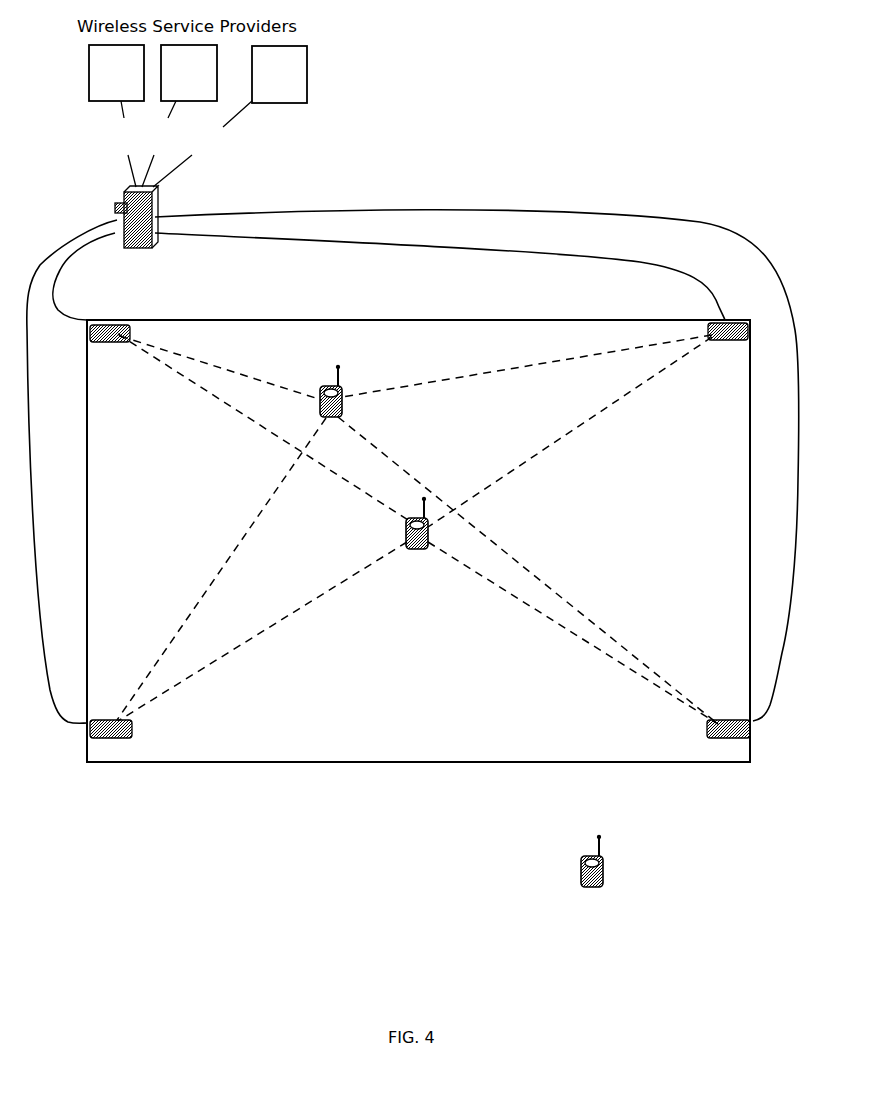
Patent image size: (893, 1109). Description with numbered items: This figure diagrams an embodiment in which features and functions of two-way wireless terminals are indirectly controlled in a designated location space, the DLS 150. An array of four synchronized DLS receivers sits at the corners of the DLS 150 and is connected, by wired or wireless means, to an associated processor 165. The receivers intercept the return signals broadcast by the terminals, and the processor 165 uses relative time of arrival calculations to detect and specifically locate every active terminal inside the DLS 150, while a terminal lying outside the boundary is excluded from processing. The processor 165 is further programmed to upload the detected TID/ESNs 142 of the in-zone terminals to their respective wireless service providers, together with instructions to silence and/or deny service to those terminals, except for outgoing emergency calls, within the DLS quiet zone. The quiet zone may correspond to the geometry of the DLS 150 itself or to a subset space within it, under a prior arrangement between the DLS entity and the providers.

The TID/ESN 142 is at (179, 144).
The processor 165 is at (155, 207).
The DLS 150 is at (375, 318).